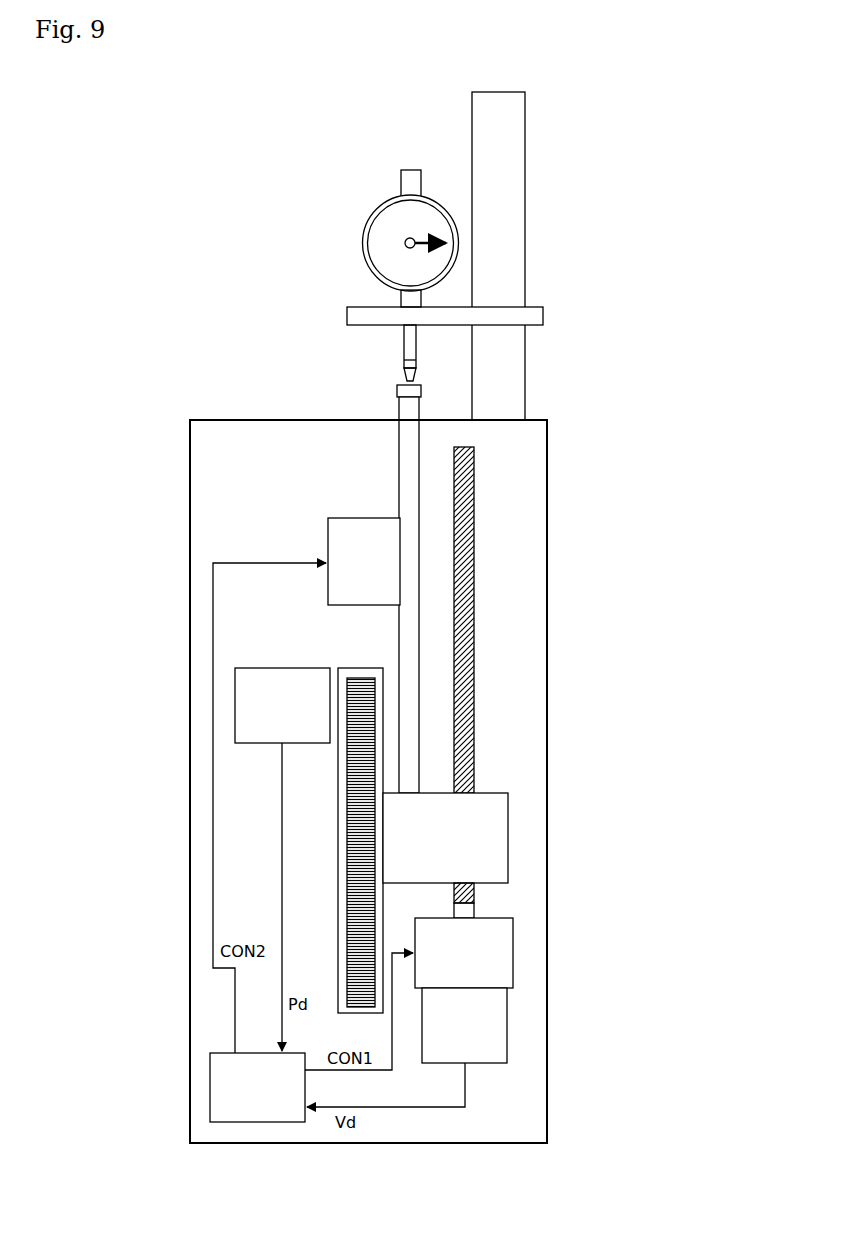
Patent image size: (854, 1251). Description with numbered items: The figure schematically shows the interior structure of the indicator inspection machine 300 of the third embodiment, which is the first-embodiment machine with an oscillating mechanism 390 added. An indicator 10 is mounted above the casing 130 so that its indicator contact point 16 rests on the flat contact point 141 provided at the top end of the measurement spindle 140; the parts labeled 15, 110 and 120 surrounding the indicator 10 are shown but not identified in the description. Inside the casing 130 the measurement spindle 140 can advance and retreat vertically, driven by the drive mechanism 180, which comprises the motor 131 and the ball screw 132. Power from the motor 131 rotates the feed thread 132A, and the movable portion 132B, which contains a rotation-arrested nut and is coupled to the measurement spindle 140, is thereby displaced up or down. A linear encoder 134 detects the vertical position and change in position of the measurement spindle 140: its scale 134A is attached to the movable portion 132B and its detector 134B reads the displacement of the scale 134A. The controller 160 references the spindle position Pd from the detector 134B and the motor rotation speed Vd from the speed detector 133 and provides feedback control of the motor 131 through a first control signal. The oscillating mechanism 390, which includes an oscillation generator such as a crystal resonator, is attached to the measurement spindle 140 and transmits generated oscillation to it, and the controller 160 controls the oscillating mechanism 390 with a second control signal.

The indicator inspection machine 300 is at (240, 134).
The indicator 10 is at (378, 212).
The spindle 15 is at (404, 354).
The indicator contact point 16 is at (404, 375).
The holding plate 110 is at (544, 318).
The column 120 is at (526, 186).
The casing 130 is at (548, 468).
The motor 131 is at (514, 952).
The ball screw 132 is at (544, 665).
The feed thread 132A is at (474, 746).
The movable portion 132B is at (516, 838).
The speed detector 133 is at (508, 1026).
The linear encoder 134 is at (212, 816).
The scale 134A is at (350, 668).
The detector 134B is at (235, 705).
The measurement spindle 140 is at (399, 463).
The contact point 141 is at (397, 393).
The controller 160 is at (210, 1085).
The drive mechanism 180 is at (703, 775).
The oscillating mechanism 390 is at (328, 535).